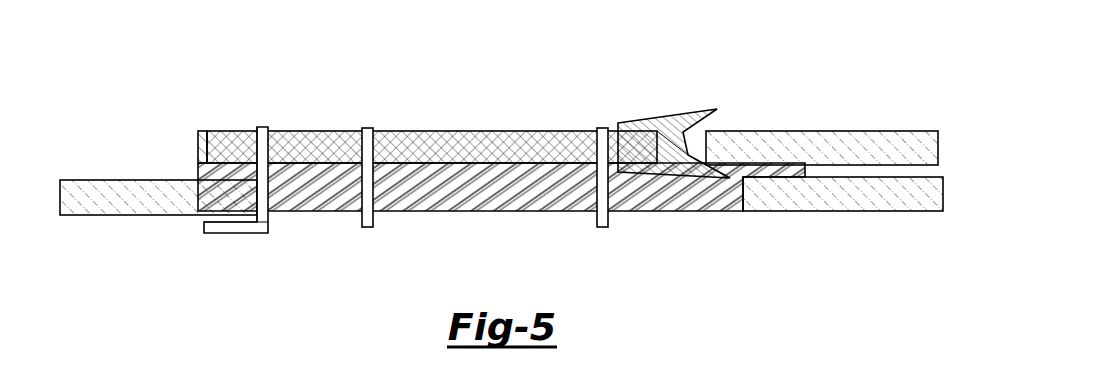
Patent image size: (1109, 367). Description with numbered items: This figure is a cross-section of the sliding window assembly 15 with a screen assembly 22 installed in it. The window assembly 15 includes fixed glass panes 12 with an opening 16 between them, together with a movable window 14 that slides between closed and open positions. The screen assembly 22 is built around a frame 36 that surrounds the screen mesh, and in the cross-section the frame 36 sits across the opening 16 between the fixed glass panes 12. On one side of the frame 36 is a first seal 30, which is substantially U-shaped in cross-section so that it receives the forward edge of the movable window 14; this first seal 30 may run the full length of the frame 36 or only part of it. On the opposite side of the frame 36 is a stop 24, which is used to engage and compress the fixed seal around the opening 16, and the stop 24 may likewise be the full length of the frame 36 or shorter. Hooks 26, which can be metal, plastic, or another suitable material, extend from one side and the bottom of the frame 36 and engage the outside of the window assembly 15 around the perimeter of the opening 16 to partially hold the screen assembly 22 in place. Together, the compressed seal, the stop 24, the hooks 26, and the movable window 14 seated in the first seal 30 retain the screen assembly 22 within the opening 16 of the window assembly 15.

The fixed glass pane 12 is at (140, 198).
The movable window 14 is at (852, 131).
The sliding window assembly 15 is at (780, 55).
The opening 16 is at (483, 213).
The screen assembly 22 is at (488, 78).
The stop 24 is at (197, 147).
The hooks 26 is at (235, 233).
The first seal 30 is at (682, 110).
The frame 36 is at (306, 148).